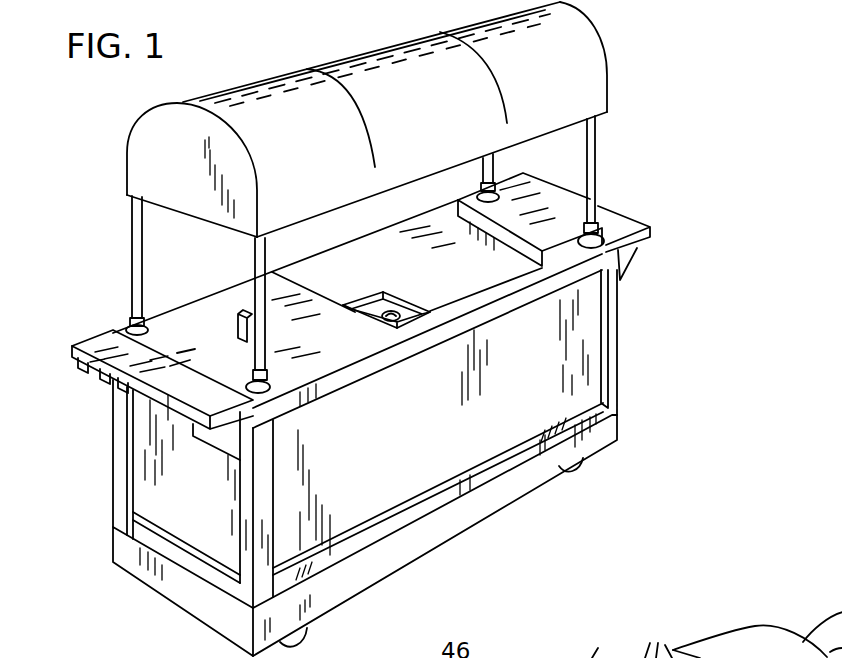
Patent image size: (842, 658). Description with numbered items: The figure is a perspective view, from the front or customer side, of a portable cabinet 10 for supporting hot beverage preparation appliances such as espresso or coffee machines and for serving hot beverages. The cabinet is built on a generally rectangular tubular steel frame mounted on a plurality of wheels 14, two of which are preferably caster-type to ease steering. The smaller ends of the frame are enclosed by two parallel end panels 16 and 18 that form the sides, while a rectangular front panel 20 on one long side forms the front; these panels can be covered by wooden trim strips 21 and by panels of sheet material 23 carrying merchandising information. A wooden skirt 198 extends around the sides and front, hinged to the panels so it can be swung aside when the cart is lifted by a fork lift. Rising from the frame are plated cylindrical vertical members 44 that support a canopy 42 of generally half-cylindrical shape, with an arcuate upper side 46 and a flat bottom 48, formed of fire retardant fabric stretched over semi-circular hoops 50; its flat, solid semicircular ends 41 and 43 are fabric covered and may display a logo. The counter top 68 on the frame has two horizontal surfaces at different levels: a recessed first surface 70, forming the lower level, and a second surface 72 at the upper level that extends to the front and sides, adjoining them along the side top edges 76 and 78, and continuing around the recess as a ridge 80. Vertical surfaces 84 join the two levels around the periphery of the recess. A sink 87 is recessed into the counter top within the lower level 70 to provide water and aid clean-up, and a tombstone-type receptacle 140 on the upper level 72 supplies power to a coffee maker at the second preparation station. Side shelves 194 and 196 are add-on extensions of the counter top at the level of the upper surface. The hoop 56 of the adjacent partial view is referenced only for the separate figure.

The portable cabinet 10 is at (664, 104).
The wheels 14 is at (300, 644).
The end panel 16 is at (617, 328).
The end panel 18 is at (158, 472).
The front panel 20 is at (568, 360).
The trim strips 21 is at (322, 558).
The panels of sheet material 23 is at (449, 421).
The semicircular end of canopy 41 is at (197, 164).
The canopy 42 is at (565, 35).
The semicircular end of canopy 43 is at (606, 54).
The vertical members 44 is at (133, 257).
The arcuate upper side 46 is at (259, 72).
The flat bottom 48 is at (163, 207).
The semi-circular hoops 50 is at (598, 639).
The fragment of adjacent figure 56 is at (740, 635).
The counter top 68 is at (345, 250).
The first surface 70 is at (493, 266).
The second surface 72 is at (332, 342).
The side top edge 76 is at (550, 213).
The side top edge 78 is at (190, 380).
The ridge 80 is at (472, 293).
The vertical surfaces 84 is at (470, 238).
The sink 87 is at (366, 292).
The receptacle 140 is at (238, 312).
The side shelf 194 is at (623, 220).
The side shelf 196 is at (95, 345).
The skirt 198 is at (192, 598).